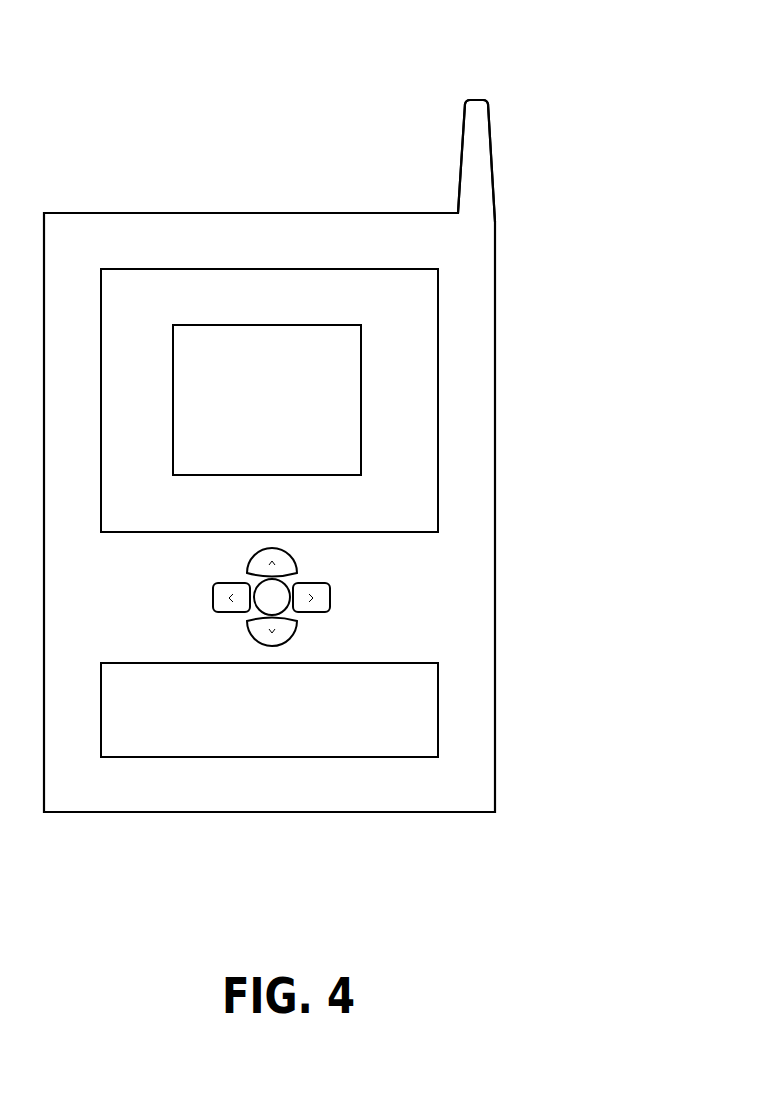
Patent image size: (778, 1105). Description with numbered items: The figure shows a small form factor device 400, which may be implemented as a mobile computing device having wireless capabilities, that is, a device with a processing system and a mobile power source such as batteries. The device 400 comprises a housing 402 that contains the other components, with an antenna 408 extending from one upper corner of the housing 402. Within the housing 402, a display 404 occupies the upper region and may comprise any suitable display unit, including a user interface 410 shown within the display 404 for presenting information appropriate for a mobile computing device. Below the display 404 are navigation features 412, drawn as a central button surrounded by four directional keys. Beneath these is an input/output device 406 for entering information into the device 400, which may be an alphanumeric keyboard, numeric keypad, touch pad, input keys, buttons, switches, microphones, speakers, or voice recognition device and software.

The small form factor device 400 is at (152, 82).
The housing 402 is at (497, 513).
The display 404 is at (440, 287).
The input/output (I/O) device 406 is at (440, 701).
The antenna 408 is at (462, 150).
The user interface 410 is at (362, 400).
The navigation features 412 is at (341, 588).